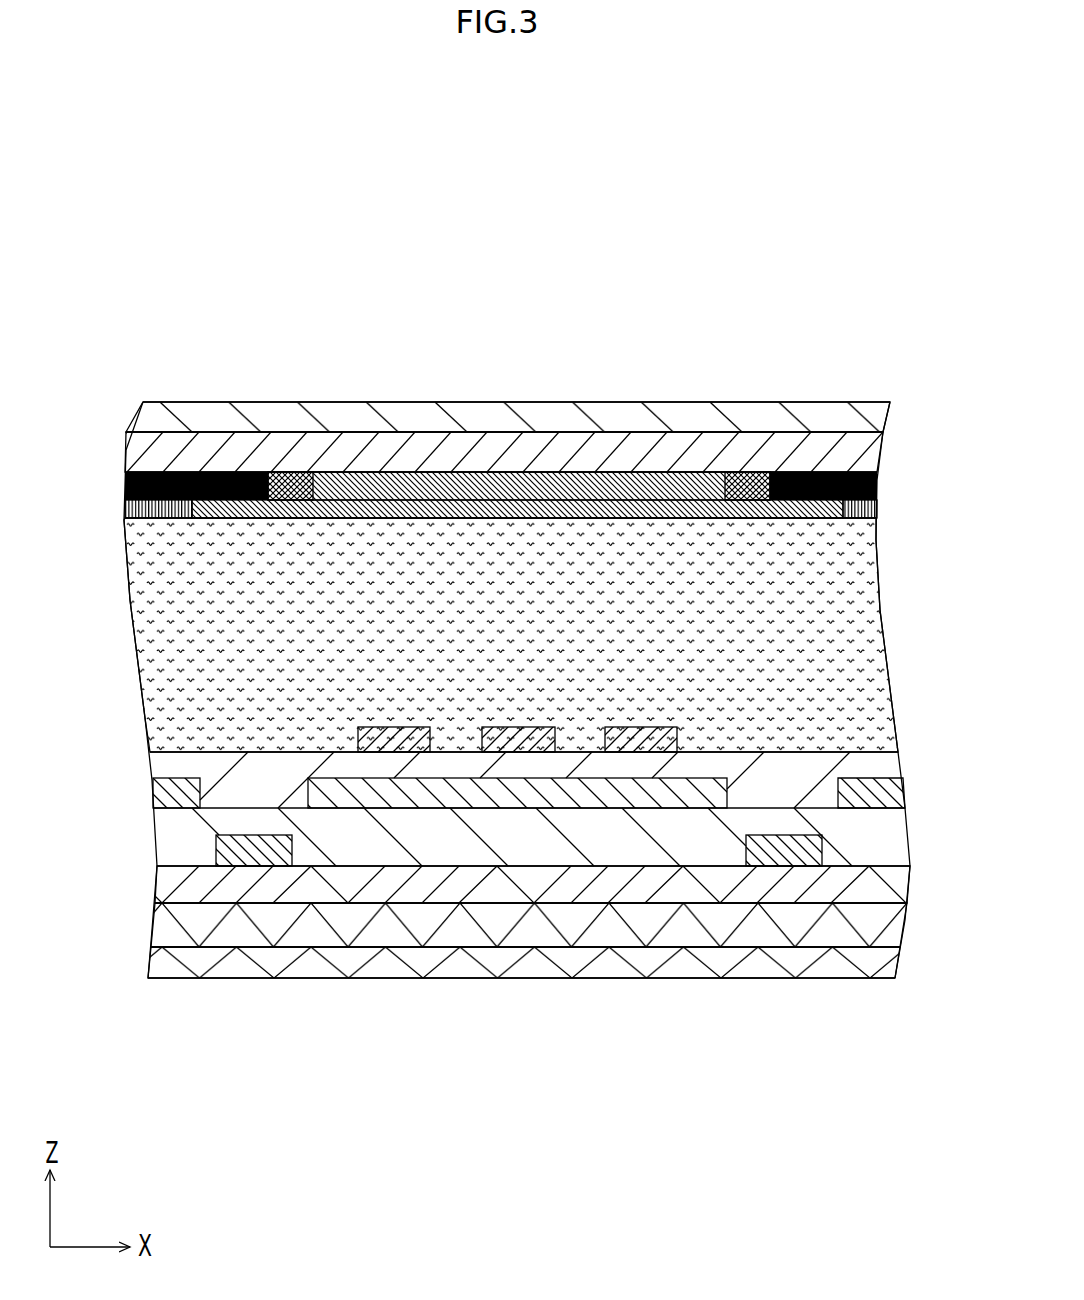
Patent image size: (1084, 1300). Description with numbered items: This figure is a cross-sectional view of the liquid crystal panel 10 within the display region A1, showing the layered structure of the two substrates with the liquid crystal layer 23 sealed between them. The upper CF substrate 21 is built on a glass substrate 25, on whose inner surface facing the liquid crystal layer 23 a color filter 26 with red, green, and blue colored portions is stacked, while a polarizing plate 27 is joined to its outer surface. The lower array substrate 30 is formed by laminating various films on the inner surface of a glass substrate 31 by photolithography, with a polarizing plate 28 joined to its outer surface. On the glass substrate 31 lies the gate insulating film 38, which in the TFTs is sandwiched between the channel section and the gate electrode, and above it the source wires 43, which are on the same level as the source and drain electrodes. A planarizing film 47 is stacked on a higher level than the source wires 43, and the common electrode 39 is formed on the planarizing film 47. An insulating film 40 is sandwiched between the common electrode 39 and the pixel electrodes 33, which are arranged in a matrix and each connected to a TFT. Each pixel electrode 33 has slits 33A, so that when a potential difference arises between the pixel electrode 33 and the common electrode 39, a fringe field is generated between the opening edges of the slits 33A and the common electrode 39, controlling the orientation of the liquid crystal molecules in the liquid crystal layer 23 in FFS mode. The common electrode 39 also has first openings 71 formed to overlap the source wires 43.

The liquid crystal panel 10 is at (240, 272).
The CF substrate 21 is at (113, 452).
The liquid crystal layer 23 is at (857, 556).
The glass substrate 25 is at (480, 445).
The color filter 26 is at (572, 490).
The polarizing plate 27 is at (682, 418).
The polarizing plate 28 is at (617, 963).
The array substrate 30 is at (135, 930).
The glass substrate 31 is at (423, 932).
The pixel electrode 33 is at (392, 727).
The slit 33A is at (478, 735).
The gate insulating film 38 is at (503, 888).
The common electrode 39 is at (353, 800).
The insulating film 40 is at (714, 765).
The source wire 43 is at (241, 851).
The planarizing film 47 is at (683, 847).
The first opening 71 is at (211, 792).
The display region A1 is at (788, 366).